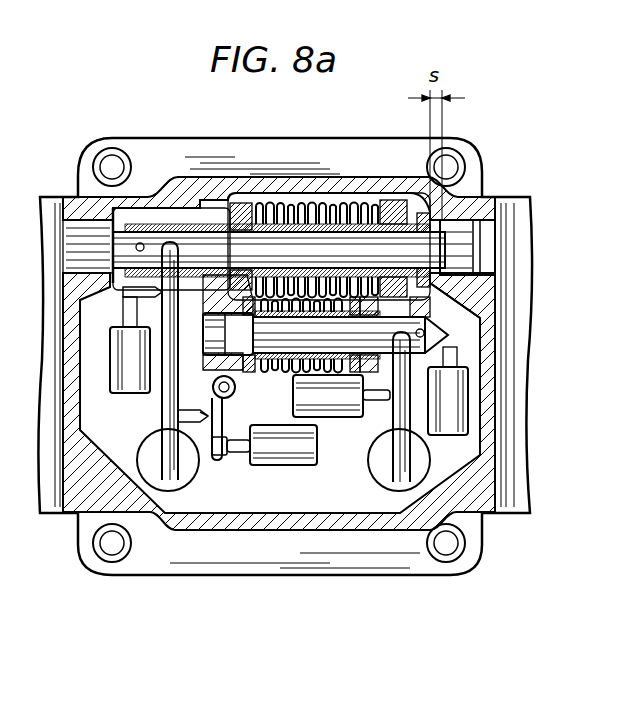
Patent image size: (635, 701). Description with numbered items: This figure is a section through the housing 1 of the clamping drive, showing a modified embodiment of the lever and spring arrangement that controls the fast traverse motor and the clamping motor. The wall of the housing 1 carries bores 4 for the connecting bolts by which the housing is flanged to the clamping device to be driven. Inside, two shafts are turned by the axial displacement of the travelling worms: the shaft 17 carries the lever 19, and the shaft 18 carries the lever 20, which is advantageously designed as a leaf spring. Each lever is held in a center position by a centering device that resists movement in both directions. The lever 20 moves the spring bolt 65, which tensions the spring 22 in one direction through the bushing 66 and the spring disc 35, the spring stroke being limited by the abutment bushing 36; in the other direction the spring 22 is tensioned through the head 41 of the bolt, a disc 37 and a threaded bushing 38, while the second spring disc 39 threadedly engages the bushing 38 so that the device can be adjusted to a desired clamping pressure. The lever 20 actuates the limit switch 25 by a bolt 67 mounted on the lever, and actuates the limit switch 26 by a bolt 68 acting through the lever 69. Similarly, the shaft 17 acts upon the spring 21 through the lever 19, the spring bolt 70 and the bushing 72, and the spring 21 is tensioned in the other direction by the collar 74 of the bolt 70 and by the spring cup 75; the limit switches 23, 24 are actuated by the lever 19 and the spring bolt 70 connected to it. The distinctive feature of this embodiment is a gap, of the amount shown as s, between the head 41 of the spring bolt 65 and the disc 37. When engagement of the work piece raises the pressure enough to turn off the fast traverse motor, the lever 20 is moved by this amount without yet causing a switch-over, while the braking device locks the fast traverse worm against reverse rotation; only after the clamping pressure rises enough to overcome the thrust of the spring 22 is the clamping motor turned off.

The housing 1 is at (295, 518).
The bores 4 is at (452, 165).
The shaft 17 is at (378, 470).
The shaft 18 is at (187, 470).
The lever 19 is at (395, 416).
The lever 20 is at (162, 420).
The spring 21 is at (286, 372).
The spring 22 is at (318, 232).
The limit switch 23 is at (298, 398).
The limit switch 24 is at (467, 382).
The limit switch 25 is at (118, 375).
The limit switch 26 is at (283, 466).
The spring disc 35 is at (233, 222).
The abutment bushing 36 is at (289, 202).
The disc 37 is at (440, 212).
The threaded bushing 38 is at (375, 200).
The second spring disc 39 is at (400, 203).
The head of bolt 65 41 is at (455, 281).
The spring bolt 65 is at (153, 237).
The bushing 66 is at (224, 207).
The bolt 67 is at (128, 296).
The bolt 68 is at (183, 414).
The lever 69 is at (224, 403).
The spring bolt 70 is at (388, 327).
The bushing 72 is at (448, 337).
The collar of bolt 70 74 is at (228, 336).
The spring cup 75 is at (207, 418).